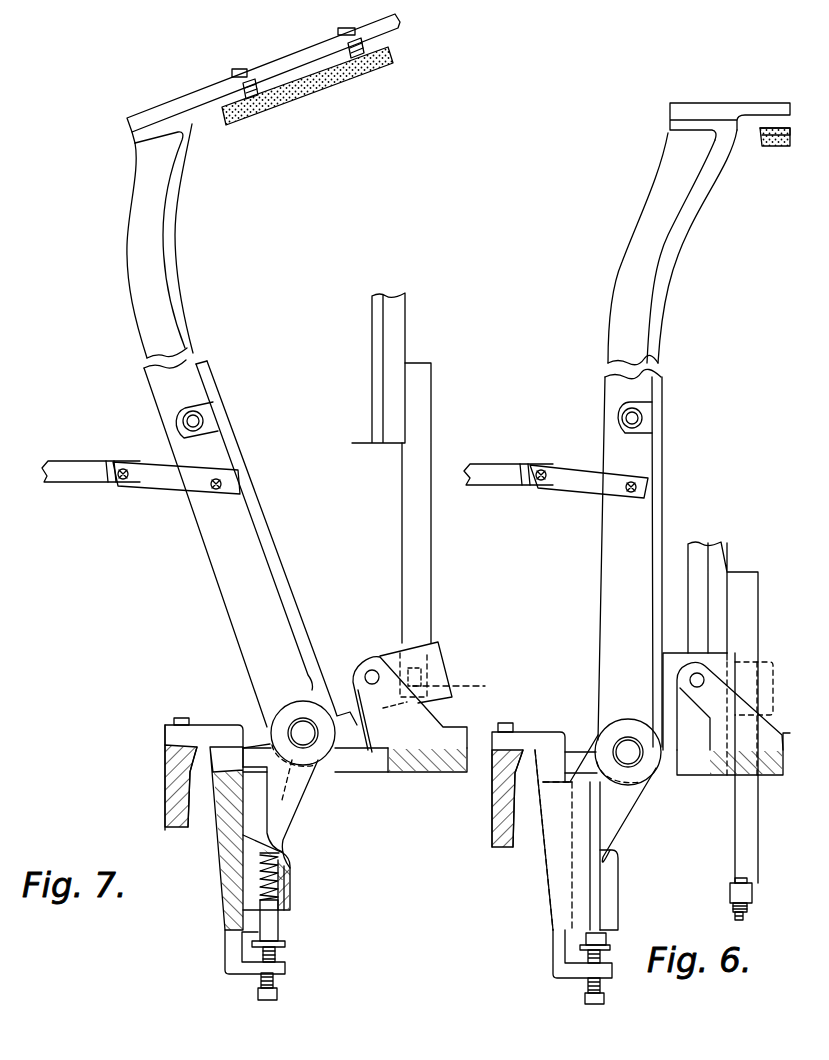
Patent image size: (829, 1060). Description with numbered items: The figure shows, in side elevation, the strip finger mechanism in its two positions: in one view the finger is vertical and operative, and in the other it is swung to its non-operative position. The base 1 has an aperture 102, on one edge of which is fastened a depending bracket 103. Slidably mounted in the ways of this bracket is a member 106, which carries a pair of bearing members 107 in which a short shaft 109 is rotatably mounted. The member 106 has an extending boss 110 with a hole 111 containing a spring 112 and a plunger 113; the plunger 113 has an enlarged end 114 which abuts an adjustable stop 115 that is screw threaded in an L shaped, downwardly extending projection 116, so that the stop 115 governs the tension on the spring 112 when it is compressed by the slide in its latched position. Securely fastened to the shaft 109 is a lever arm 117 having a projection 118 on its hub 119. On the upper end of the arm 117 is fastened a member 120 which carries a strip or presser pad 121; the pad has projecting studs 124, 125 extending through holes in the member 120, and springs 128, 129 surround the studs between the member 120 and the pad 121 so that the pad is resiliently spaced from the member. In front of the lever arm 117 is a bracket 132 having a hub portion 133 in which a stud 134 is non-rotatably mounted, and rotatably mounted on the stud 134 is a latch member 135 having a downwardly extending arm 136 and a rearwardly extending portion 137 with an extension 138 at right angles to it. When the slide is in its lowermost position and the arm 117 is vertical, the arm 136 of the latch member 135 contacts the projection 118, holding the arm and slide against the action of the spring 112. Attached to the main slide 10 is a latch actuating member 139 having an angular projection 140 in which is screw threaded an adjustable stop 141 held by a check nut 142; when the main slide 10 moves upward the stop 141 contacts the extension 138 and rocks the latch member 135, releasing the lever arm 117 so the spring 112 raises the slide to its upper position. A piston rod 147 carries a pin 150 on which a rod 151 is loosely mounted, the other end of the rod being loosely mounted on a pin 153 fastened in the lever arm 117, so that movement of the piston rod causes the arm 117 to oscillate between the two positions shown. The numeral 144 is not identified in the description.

In FIG. 7, the base 1 is at (168, 797).
In FIG. 6, the base 1 is at (495, 818).
In FIG. 7, the main slide 10 is at (398, 336).
In FIG. 6, the main slide 10 is at (722, 546).
In FIG. 7, the aperture 102 is at (357, 772).
In FIG. 6, the aperture 102 is at (696, 770).
In FIG. 7, the depending bracket 103 is at (222, 884).
In FIG. 6, the depending bracket 103 is at (558, 868).
In FIG. 7, the member (slide) 106 is at (241, 742).
In FIG. 7, the bearing member 107 is at (292, 819).
In FIG. 6, the bearing member 107 is at (622, 820).
In FIG. 7, the short shaft 109 is at (332, 768).
In FIG. 6, the short shaft 109 is at (612, 740).
In FIG. 7, the extending boss 110 is at (290, 862).
In FIG. 6, the extending boss 110 is at (618, 882).
In FIG. 7, the hole 111 is at (281, 877).
In FIG. 7, the spring 112 is at (282, 889).
In FIG. 7, the plunger 113 is at (280, 925).
In FIG. 6, the plunger 113 is at (608, 938).
In FIG. 7, the enlarged end 114 is at (286, 946).
In FIG. 7, the adjustable stop 115 is at (277, 958).
In FIG. 6, the adjustable stop 115 is at (595, 1004).
In FIG. 7, the L shaped, downwardly extending projection 116 is at (238, 972).
In FIG. 6, the L shaped, downwardly extending projection 116 is at (565, 975).
In FIG. 7, the lever arm 117 is at (276, 540).
In FIG. 6, the lever arm 117 is at (655, 521).
In FIG. 7, the projection 118 is at (338, 717).
In FIG. 6, the projection 118 is at (668, 762).
In FIG. 7, the hub 119 is at (284, 783).
In FIG. 7, the member 120 is at (161, 112).
In FIG. 6, the member 120 is at (708, 105).
In FIG. 7, the strip or presser pad 121 is at (308, 104).
In FIG. 6, the strip or presser pad 121 is at (770, 150).
In FIG. 7, the projecting stud 124 is at (233, 71).
In FIG. 7, the projecting stud 125 is at (348, 32).
In FIG. 7, the spring 128 is at (252, 86).
In FIG. 7, the spring 129 is at (392, 35).
In FIG. 7, the bracket 132 is at (435, 726).
In FIG. 6, the bracket 132 is at (762, 752).
In FIG. 7, the hub portion 133 is at (358, 674).
In FIG. 7, the stud 134 is at (372, 670).
In FIG. 6, the stud 134 is at (695, 672).
In FIG. 7, the latch member 135 is at (455, 675).
In FIG. 6, the latch member 135 is at (765, 658).
In FIG. 7, the downwardly extending arm 136 is at (373, 741).
In FIG. 6, the downwardly extending arm 136 is at (678, 706).
In FIG. 7, the rearwardly extending portion 137 is at (438, 664).
In FIG. 7, the extension 138 is at (425, 650).
In FIG. 6, the extension 138 is at (744, 660).
In FIG. 7, the latch actuating member 139 is at (425, 410).
In FIG. 6, the latch actuating member 139 is at (750, 598).
In FIG. 7, the angular projection 140 is at (465, 688).
In FIG. 6, the angular projection 140 is at (730, 892).
In FIG. 6, the adjustable stop 141 is at (738, 920).
In FIG. 6, the check nut 142 is at (733, 908).
In FIG. 7, the pivot boss 144 is at (182, 420).
In FIG. 6, the pivot boss 144 is at (620, 416).
In FIG. 7, the piston rod 147 is at (64, 462).
In FIG. 6, the piston rod 147 is at (492, 468).
In FIG. 7, the pin 150 is at (124, 482).
In FIG. 6, the pin 150 is at (538, 482).
In FIG. 7, the rod 151 is at (163, 492).
In FIG. 6, the rod 151 is at (574, 490).
In FIG. 7, the pin 153 is at (228, 478).
In FIG. 6, the pin 153 is at (645, 480).